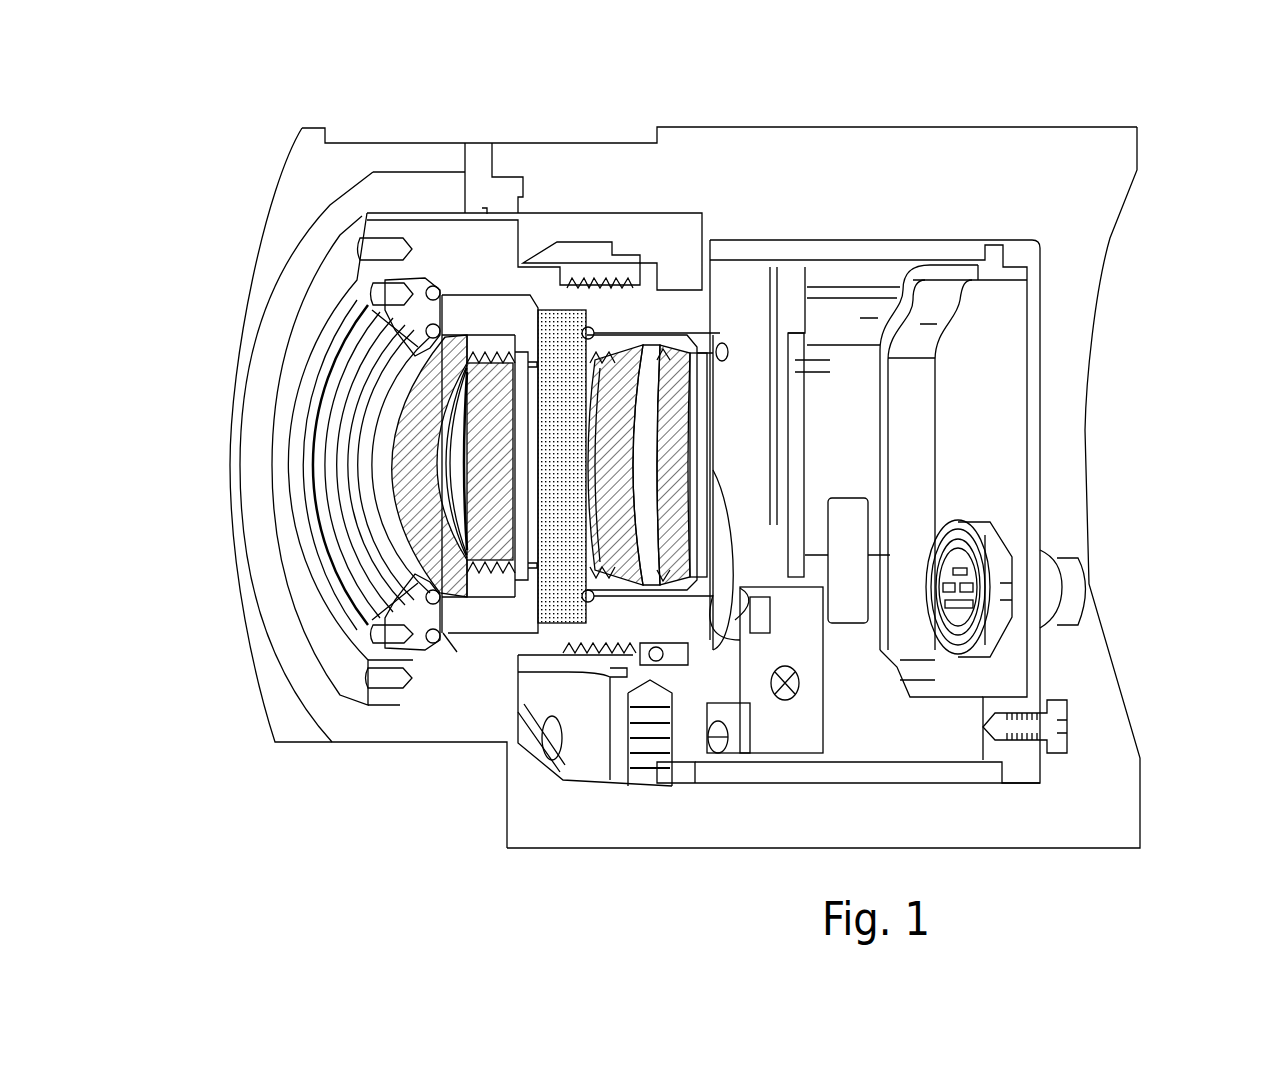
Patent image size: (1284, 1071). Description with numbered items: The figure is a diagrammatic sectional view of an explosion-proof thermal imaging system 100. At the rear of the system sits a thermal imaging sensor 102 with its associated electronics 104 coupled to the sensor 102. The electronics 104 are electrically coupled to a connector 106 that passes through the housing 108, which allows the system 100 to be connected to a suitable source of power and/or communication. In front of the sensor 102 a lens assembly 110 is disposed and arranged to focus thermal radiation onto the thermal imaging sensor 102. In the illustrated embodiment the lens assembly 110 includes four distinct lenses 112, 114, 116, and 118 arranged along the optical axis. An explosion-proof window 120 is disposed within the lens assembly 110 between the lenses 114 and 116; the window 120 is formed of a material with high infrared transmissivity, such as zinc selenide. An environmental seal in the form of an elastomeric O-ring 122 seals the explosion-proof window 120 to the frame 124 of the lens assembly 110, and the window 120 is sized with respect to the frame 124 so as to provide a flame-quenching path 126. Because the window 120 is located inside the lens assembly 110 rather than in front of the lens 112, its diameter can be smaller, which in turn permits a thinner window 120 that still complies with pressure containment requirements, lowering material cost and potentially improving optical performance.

The explosion-proof thermal imaging system 100 is at (1146, 90).
The thermal imaging sensor 102 is at (800, 470).
The electronics 104 is at (868, 527).
The connector 106 is at (1052, 640).
The housing 108 is at (1033, 673).
The lens assembly 110 is at (471, 218).
The lens 112 is at (412, 492).
The lens 114 is at (490, 533).
The lens 116 is at (625, 555).
The lens 118 is at (683, 522).
The explosion-proof window 120 is at (556, 590).
The elastomeric O-ring 122 is at (594, 327).
The frame 124 is at (710, 330).
The flame-quenching path 126 is at (518, 768).